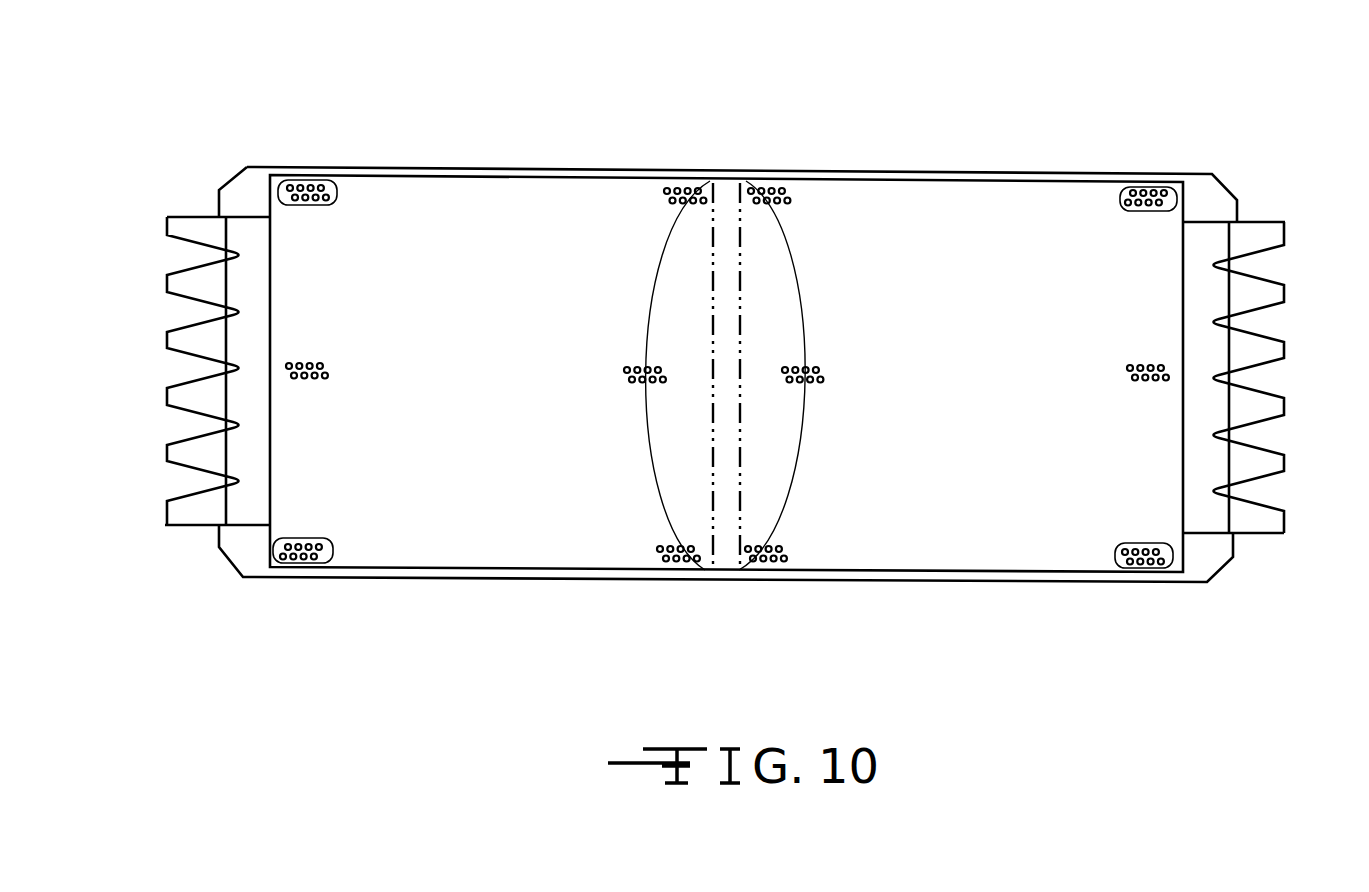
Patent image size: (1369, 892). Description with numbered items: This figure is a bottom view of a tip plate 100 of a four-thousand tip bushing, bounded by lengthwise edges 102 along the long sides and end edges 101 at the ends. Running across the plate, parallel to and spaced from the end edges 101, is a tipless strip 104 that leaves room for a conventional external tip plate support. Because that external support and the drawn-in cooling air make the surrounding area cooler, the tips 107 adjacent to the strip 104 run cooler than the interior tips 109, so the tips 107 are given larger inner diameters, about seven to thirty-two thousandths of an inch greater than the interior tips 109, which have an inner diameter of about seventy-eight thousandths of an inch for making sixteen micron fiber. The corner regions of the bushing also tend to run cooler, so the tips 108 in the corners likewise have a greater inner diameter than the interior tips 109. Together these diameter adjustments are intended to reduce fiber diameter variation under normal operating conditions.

The tip plate 100 is at (543, 203).
The end edges 101 is at (268, 348).
The lengthwise edges 102 is at (912, 172).
The tipless strip 104 is at (728, 200).
The tips adjacent to the strip 107 is at (775, 330).
The tips in the corner regions 108 is at (307, 188).
The interior tips 109 is at (433, 307).